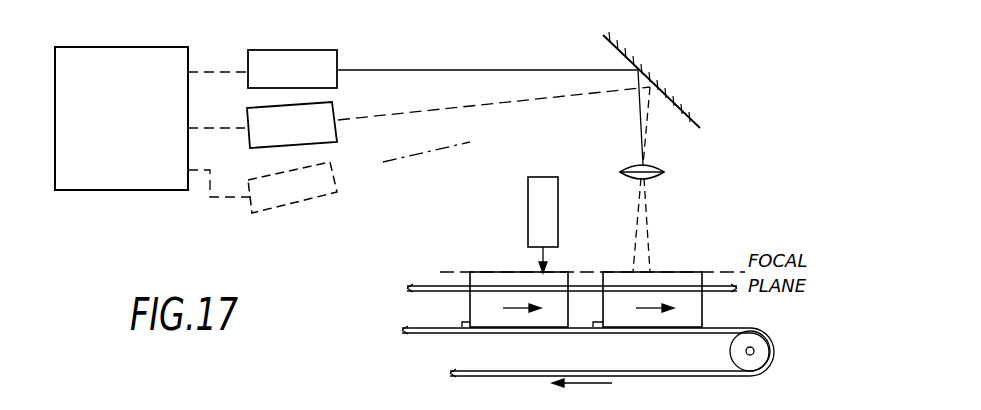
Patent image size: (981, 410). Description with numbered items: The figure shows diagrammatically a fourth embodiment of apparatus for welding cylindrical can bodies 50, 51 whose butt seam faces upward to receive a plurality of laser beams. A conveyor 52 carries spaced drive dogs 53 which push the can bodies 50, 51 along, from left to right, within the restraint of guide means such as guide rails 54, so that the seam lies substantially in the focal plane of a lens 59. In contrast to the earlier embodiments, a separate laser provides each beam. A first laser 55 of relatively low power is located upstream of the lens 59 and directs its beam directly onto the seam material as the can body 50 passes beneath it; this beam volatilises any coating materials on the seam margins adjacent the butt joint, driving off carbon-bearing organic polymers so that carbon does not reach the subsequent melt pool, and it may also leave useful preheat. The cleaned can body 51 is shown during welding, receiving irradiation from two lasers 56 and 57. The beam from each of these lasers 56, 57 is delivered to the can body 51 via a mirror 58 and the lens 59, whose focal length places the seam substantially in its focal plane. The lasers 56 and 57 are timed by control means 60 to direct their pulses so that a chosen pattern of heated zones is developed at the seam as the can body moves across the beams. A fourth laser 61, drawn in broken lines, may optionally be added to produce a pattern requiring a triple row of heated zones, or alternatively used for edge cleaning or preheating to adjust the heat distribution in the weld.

The can body 50 is at (470, 303).
The can body 51 is at (678, 320).
The conveyor 52 is at (428, 333).
The drive dog 53 is at (465, 327).
The guide rail 54 is at (420, 285).
The first laser 55 is at (545, 215).
The laser 56 is at (307, 50).
The laser 57 is at (337, 108).
The mirror 58 is at (676, 80).
The lens 59 is at (690, 173).
The control means 60 is at (140, 177).
The fourth laser 61 is at (272, 206).